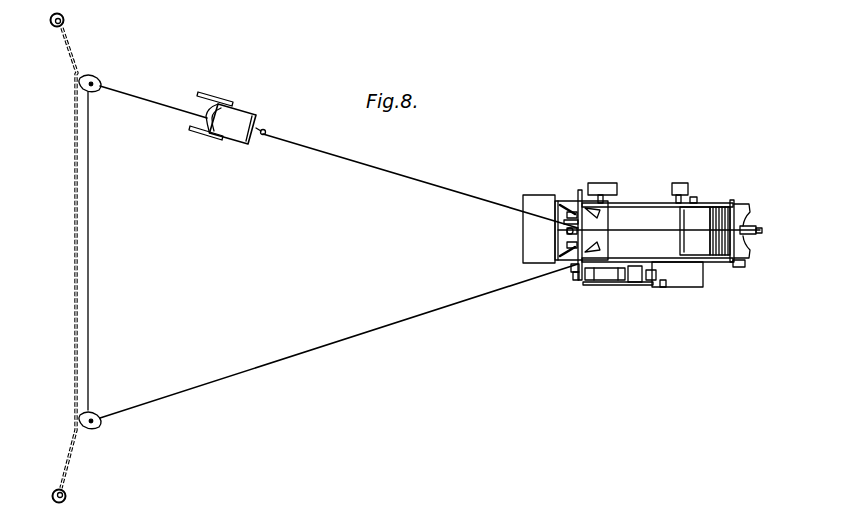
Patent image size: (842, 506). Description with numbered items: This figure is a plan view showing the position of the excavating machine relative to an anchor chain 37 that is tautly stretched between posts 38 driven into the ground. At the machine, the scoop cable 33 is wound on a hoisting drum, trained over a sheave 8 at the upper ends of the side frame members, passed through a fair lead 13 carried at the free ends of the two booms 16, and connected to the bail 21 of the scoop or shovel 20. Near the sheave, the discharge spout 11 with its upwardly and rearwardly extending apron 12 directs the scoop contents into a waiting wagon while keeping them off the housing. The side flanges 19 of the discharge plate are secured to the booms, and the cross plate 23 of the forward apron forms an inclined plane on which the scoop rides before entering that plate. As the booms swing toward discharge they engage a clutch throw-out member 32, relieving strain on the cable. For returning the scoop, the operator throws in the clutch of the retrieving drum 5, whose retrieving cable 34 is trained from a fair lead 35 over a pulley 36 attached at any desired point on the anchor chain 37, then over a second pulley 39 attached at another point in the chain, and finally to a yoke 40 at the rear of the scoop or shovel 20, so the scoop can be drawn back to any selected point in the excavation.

The retrieving drum 5 is at (628, 276).
The sheave 8 is at (756, 228).
The discharge spout 11 is at (723, 208).
The apron 12 is at (697, 218).
The fair lead 13 is at (570, 207).
The booms 16 is at (625, 203).
The side flanges 19 is at (562, 233).
The scoop or shovel 20 is at (250, 120).
The bail 21 is at (262, 138).
The cross plate 23 is at (527, 195).
The clutch throw-out member 32 is at (745, 266).
The cable 33 is at (389, 165).
The retrieving cable 34 is at (325, 345).
The fair lead 35 is at (573, 276).
The pulley 36 is at (97, 410).
The anchor chain 37 is at (73, 168).
The posts 38 is at (52, 27).
The second pulley 39 is at (99, 82).
The yoke 40 is at (205, 118).